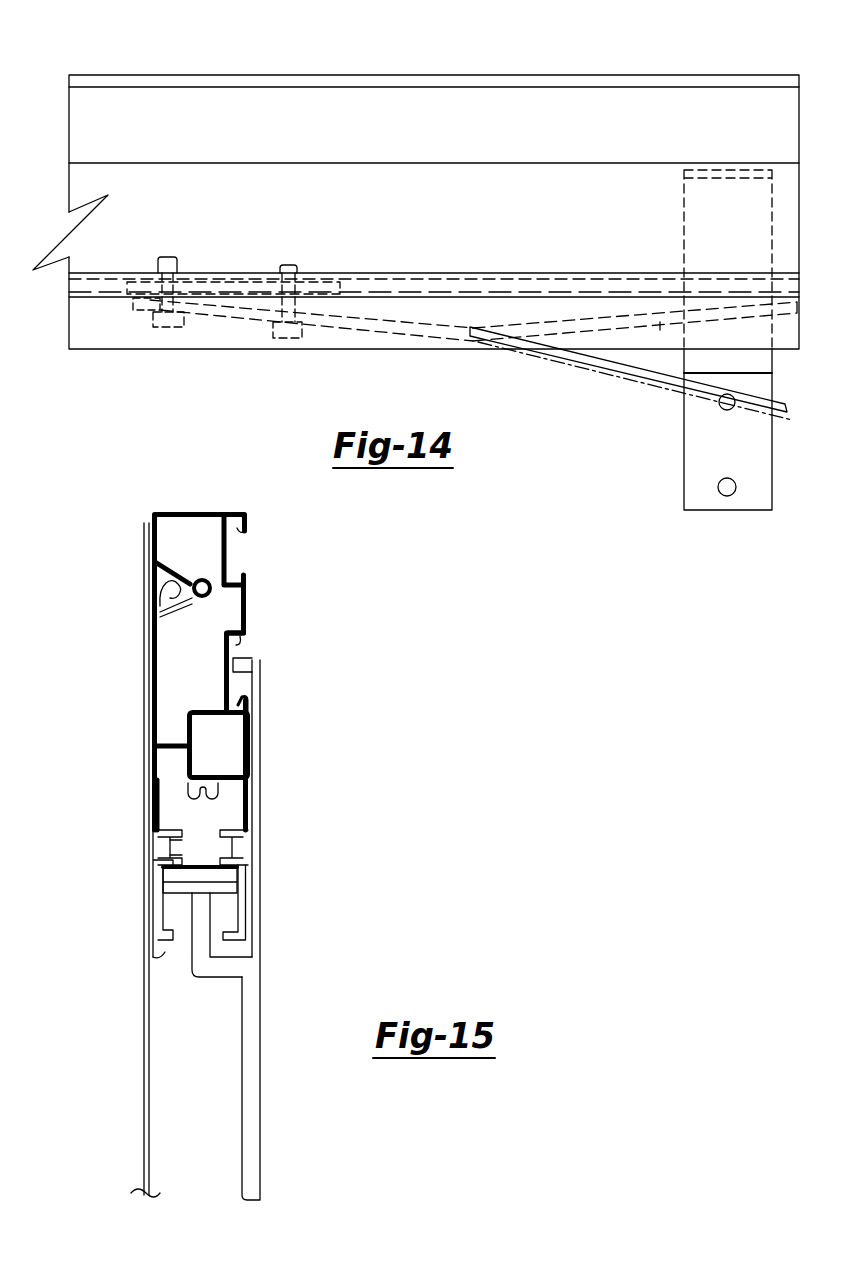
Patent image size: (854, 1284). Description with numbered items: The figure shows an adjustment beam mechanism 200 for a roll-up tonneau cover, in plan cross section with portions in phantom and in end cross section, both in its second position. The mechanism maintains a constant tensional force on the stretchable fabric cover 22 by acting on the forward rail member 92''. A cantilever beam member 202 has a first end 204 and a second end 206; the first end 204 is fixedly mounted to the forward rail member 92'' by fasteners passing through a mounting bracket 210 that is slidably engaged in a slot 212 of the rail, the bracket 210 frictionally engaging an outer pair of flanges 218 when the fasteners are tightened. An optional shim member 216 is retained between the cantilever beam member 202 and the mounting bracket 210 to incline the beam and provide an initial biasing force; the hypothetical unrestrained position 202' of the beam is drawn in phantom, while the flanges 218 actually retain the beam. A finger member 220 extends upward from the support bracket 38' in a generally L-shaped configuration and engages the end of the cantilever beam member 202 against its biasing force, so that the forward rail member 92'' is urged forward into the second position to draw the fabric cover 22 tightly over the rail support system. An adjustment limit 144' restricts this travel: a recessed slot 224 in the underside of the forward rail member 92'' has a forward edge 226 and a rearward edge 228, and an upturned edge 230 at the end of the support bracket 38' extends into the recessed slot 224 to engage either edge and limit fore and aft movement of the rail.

In FIG. 14, the forward rail member 92'' is at (416, 181).
In FIG. 15, the forward rail member 92'' is at (153, 649).
In FIG. 14, the support bracket 38' is at (701, 362).
In FIG. 15, the support bracket 38' is at (226, 930).
In FIG. 14, the first end 204 is at (220, 315).
In FIG. 14, the slot 212 is at (105, 270).
In FIG. 15, the slot 212 is at (183, 847).
In FIG. 14, the mounting bracket 210 is at (237, 272).
In FIG. 14, the shim member 216 is at (345, 290).
In FIG. 14, the cantilever beam member 202 is at (628, 369).
In FIG. 15, the cantilever beam member 202 is at (264, 881).
In FIG. 14, the hypothetical unrestrained position 202' is at (635, 393).
In FIG. 14, the second end 206 is at (666, 322).
In FIG. 14, the adjustment beam mechanism 200 is at (553, 420).
In FIG. 15, the adjustment beam mechanism 200 is at (108, 1080).
In FIG. 15, the fabric cover 22 is at (143, 982).
In FIG. 15, the upturned edge 230 is at (253, 663).
In FIG. 15, the forward edge 226 is at (247, 642).
In FIG. 15, the recessed slot 224 is at (238, 645).
In FIG. 15, the rearward edge 228 is at (243, 700).
In FIG. 15, the adjustment limit 144' is at (292, 745).
In FIG. 15, the flanges 218 is at (172, 956).
In FIG. 15, the finger member 220 is at (203, 948).